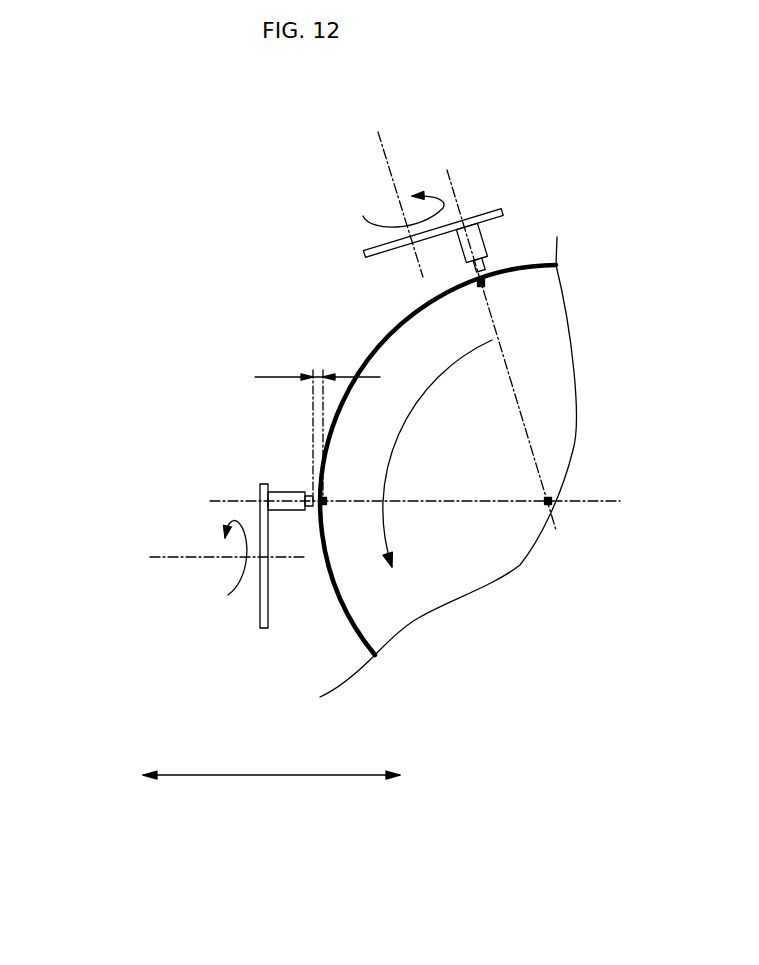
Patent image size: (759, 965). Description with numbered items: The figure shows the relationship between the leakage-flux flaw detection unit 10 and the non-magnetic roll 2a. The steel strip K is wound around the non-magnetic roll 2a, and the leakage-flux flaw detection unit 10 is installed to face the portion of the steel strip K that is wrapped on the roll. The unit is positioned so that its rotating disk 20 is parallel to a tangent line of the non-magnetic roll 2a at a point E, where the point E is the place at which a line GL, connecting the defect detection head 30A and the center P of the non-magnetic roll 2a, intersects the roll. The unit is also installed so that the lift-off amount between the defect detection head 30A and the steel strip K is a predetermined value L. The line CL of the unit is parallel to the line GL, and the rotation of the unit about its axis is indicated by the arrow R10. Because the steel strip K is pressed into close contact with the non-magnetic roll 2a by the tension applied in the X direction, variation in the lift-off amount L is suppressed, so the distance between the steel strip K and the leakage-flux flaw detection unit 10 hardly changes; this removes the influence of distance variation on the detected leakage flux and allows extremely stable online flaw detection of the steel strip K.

The leakage-flux flaw detection unit 10 is at (515, 220).
The non-magnetic roll 2a is at (375, 602).
The steel strip K is at (383, 347).
The line connecting the defect detection head and the center of the non-magnetic rol GL is at (517, 503).
The center of the non-magnetic roll P is at (501, 350).
The point at which line GL intersects the non-magnetic roll E is at (416, 409).
The lift-off amount L is at (318, 377).
The rotating disk 20 is at (372, 252).
The defect detection head 30A is at (290, 492).
The rotation direction of tool R10 is at (213, 540).
The line parallel to GL CL is at (178, 558).
The X direction X is at (271, 763).